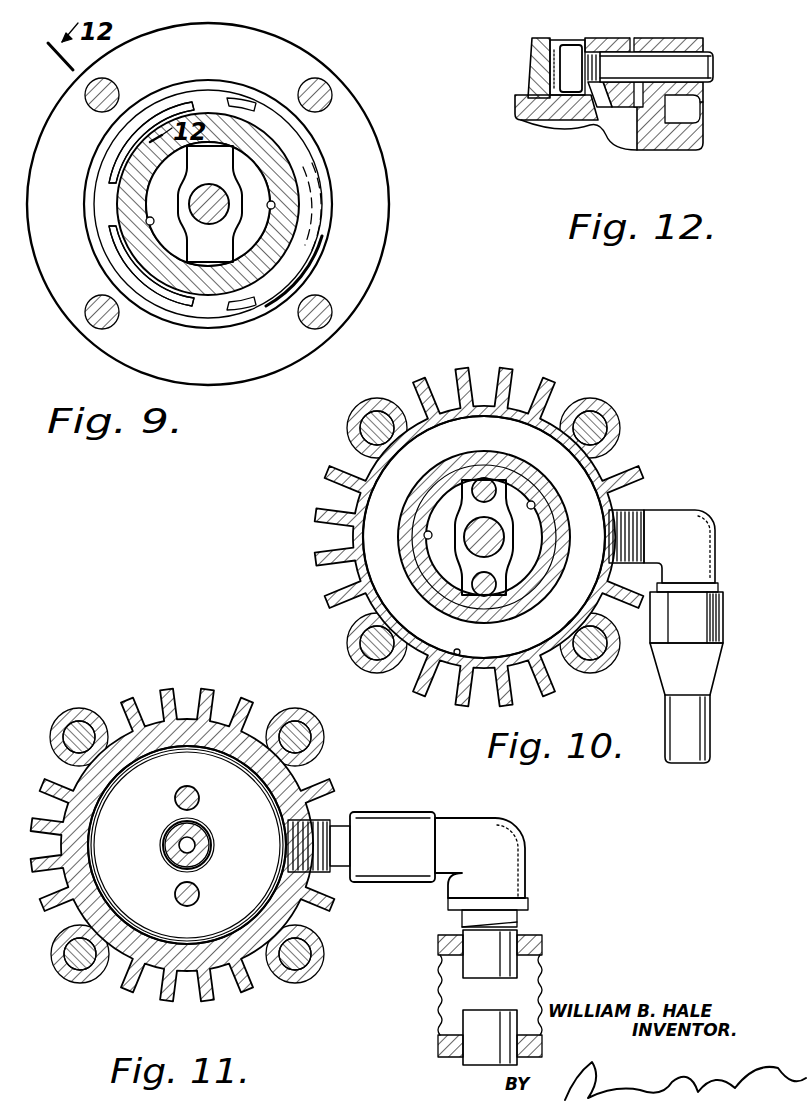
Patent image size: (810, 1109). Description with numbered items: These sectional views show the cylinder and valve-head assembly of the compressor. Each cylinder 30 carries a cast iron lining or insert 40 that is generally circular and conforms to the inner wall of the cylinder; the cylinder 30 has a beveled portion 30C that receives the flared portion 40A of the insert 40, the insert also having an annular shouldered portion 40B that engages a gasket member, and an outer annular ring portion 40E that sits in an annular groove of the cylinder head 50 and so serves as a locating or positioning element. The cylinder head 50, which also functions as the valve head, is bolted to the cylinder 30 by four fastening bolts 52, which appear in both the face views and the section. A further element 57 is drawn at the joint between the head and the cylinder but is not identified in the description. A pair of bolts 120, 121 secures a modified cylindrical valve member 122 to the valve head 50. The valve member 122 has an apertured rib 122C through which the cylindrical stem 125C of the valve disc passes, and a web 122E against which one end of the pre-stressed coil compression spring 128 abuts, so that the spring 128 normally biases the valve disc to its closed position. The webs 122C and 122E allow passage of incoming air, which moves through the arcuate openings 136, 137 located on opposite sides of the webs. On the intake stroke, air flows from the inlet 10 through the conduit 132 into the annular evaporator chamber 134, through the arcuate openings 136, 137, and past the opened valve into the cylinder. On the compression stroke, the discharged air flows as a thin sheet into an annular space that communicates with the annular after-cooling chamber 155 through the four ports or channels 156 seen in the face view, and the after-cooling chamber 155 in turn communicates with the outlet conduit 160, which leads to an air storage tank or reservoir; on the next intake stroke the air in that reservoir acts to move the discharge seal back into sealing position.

In FIG. 11, the inlet 10 is at (545, 958).
In FIG. 12, the cylinder 30 is at (541, 40).
In FIG. 12, the beveled portion 30C is at (603, 138).
In FIG. 12, the cast iron lining or insert 40 is at (520, 113).
In FIG. 12, the flared portion 40A is at (593, 100).
In FIG. 12, the annular shouldered portion 40B is at (704, 85).
In FIG. 12, the annular ring portion 40E is at (642, 110).
In FIG. 9, the cylinder head 50 is at (366, 138).
In FIG. 12, the cylinder head 50 is at (654, 42).
In FIG. 10, the cylinder head 50 is at (485, 402).
In FIG. 11, the cylinder head 50 is at (219, 735).
In FIG. 9, the fastening bolt 52 is at (90, 92).
In FIG. 12, the fastening bolt 52 is at (680, 58).
In FIG. 10, the fastening bolt 52 is at (360, 432).
In FIG. 11, the fastening bolt 52 is at (64, 737).
In FIG. 12, the joint line 57 is at (632, 40).
In FIG. 10, the bolt 120 is at (486, 480).
In FIG. 11, the bolt 120 is at (200, 797).
In FIG. 10, the bolt 121 is at (485, 596).
In FIG. 11, the bolt 121 is at (175, 893).
In FIG. 9, the modified cylindrical valve member 122 is at (206, 287).
In FIG. 10, the modified cylindrical valve member 122 is at (415, 560).
In FIG. 9, the apertured rib 122C is at (222, 158).
In FIG. 10, the web 122E is at (508, 500).
In FIG. 9, the cylindrical stem 125C is at (224, 190).
In FIG. 10, the cylindrical stem 125C is at (480, 548).
In FIG. 11, the cylindrical stem 125C is at (198, 836).
In FIG. 11, the pre-stressed coil compression spring 128 is at (180, 850).
In FIG. 11, the conduit 132 is at (502, 834).
In FIG. 11, the annular evaporator chamber 134 is at (268, 795).
In FIG. 9, the arcuate opening 136 is at (147, 222).
In FIG. 10, the arcuate opening 136 is at (425, 535).
In FIG. 9, the arcuate opening 137 is at (276, 205).
In FIG. 10, the arcuate opening 137 is at (536, 506).
In FIG. 12, the annular after-cooling chamber 155 is at (704, 103).
In FIG. 10, the annular after-cooling chamber 155 is at (457, 656).
In FIG. 9, the port or channel 156 is at (238, 100).
In FIG. 12, the port or channel 156 is at (700, 118).
In FIG. 10, the outlet conduit 160 is at (690, 727).